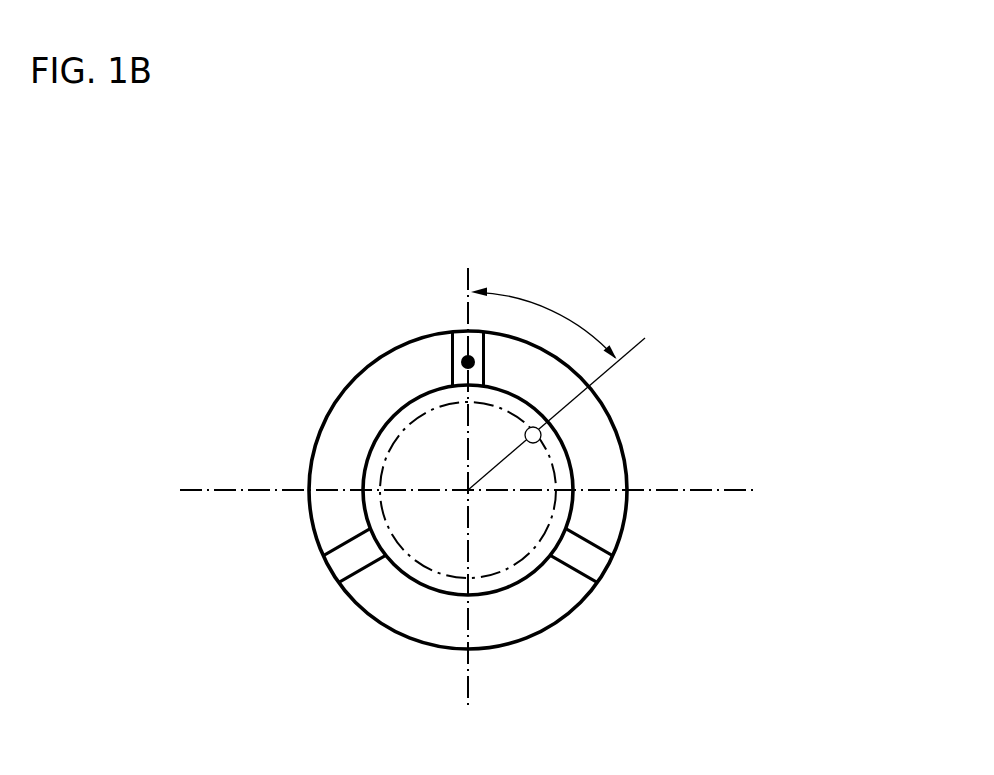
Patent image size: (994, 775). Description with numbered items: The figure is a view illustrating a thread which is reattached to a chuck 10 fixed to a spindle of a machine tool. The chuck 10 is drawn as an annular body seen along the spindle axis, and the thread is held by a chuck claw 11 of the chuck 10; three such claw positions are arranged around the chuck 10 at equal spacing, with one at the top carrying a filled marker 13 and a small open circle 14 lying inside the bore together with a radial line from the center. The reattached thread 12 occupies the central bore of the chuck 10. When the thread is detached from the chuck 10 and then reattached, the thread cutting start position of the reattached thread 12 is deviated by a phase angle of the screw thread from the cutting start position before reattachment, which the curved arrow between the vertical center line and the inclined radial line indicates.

The chuck 10 is at (530, 602).
The chuck claw 11 is at (348, 563).
The reattached thread 12 is at (392, 463).
The pin 13 is at (464, 356).
The hole 14 is at (541, 432).